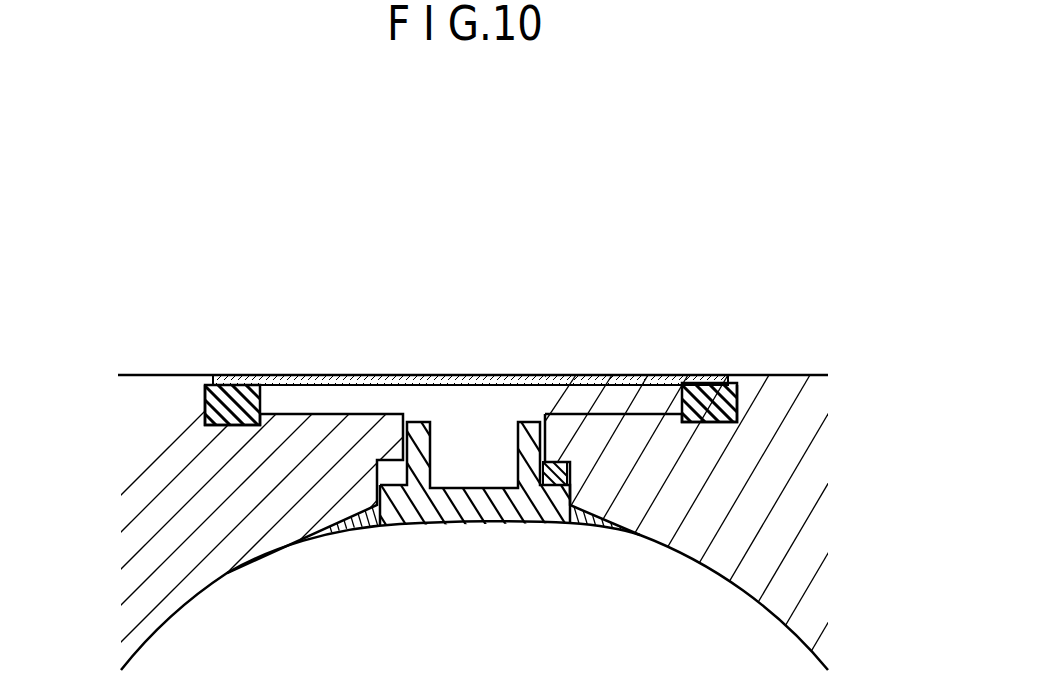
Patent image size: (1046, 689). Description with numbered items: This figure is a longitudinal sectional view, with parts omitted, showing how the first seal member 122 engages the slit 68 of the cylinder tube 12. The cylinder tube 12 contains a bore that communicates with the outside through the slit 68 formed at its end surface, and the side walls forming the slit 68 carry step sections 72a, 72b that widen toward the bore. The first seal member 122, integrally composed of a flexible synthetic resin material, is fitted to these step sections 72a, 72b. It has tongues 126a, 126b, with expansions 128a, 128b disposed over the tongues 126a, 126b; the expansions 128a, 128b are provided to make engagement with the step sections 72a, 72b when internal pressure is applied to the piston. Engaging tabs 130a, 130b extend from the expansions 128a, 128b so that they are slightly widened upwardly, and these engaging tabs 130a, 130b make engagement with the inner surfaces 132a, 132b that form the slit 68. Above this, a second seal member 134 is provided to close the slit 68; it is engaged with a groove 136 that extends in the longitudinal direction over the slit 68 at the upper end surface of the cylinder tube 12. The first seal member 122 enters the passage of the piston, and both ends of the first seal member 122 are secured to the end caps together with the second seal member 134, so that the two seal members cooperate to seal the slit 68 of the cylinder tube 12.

The cylinder tube 12 is at (770, 457).
The slit 68 is at (520, 524).
The step section 72a is at (375, 488).
The step section 72b is at (575, 480).
The first seal member 122 is at (468, 526).
The tongue 126a is at (353, 528).
The tongue 126b is at (601, 528).
The expansion 128a is at (394, 432).
The expansion 128b is at (550, 462).
The engaging tab 130a is at (418, 421).
The engaging tab 130b is at (532, 428).
The inner surface 132a is at (396, 427).
The inner surface 132b is at (544, 430).
The second seal member 134 is at (668, 375).
The groove 136 is at (740, 408).